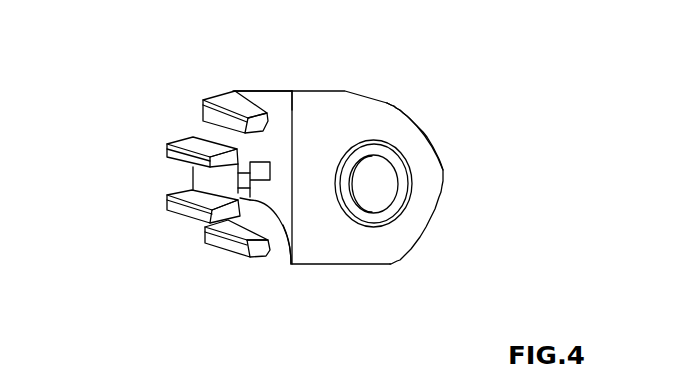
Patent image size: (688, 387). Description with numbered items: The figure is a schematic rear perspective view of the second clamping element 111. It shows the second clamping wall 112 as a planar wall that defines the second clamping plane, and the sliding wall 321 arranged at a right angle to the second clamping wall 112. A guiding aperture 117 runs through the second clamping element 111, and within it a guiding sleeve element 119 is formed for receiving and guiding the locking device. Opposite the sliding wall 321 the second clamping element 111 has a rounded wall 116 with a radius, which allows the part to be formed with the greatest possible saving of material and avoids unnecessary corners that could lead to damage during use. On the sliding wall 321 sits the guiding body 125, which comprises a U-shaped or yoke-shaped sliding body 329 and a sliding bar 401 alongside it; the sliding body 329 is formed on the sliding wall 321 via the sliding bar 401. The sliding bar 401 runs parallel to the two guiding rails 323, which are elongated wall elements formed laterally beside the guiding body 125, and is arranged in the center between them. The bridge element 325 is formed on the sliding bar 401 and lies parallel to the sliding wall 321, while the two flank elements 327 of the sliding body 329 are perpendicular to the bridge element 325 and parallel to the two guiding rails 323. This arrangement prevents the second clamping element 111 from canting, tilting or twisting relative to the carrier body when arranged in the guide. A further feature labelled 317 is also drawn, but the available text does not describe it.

The second clamping element 111 is at (263, 25).
The second clamping wall 112 is at (362, 250).
The rounded wall 116 is at (443, 159).
The guiding aperture 117 is at (370, 193).
The guiding sleeve element 119 is at (388, 147).
The guiding body 125 is at (168, 226).
The top edge 317 is at (292, 91).
The sliding wall 321 is at (280, 255).
The guiding rails 323 is at (203, 110).
The bridge element 325 is at (291, 265).
The flank elements 327 is at (216, 163).
The sliding body 329 is at (160, 123).
The sliding bar 401 is at (264, 166).